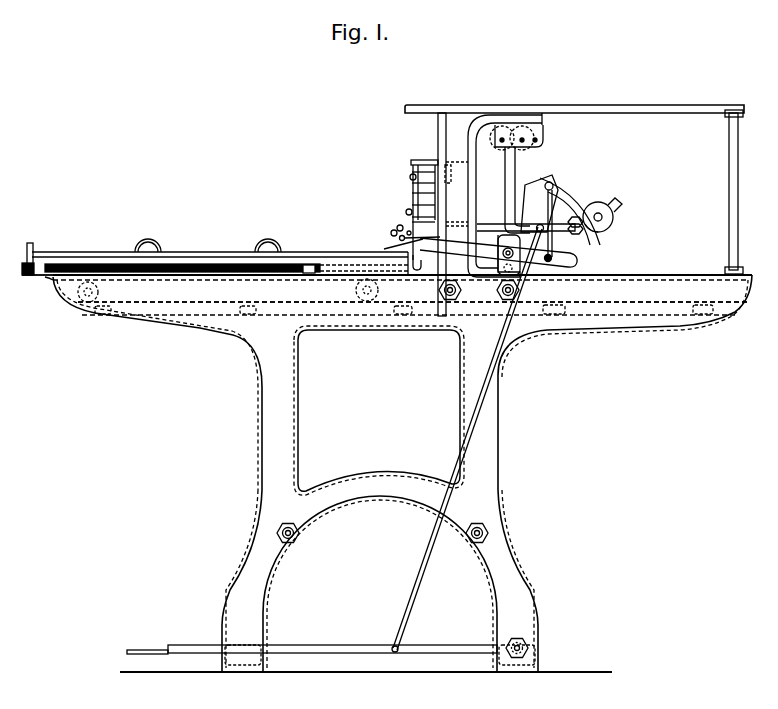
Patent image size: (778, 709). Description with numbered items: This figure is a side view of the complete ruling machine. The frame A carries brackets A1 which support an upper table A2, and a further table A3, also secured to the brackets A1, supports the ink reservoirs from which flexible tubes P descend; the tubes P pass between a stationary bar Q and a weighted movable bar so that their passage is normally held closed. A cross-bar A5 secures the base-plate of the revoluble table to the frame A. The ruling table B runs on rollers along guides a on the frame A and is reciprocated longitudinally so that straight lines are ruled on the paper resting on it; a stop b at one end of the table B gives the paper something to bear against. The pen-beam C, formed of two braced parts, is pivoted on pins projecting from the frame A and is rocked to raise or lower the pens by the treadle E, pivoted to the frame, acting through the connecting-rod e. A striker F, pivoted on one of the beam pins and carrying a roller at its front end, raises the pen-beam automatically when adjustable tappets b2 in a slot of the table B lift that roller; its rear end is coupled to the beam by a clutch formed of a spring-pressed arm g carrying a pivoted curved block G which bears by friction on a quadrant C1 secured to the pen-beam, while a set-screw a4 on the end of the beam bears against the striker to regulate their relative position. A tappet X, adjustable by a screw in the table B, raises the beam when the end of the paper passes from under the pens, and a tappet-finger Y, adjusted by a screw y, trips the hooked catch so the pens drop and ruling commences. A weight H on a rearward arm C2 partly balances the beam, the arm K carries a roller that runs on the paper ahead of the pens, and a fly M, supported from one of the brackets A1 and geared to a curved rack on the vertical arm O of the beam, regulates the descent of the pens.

The frame A is at (402, 473).
The brackets A1 is at (453, 214).
The table A2 is at (507, 106).
The table A3 is at (425, 162).
The cross-bar A5 is at (379, 410).
The guides a is at (221, 303).
The set-screw a4 is at (576, 255).
The table B is at (172, 256).
The stop b is at (34, 253).
The adjustable tappets b2 is at (208, 240).
The pen-beam C is at (495, 230).
The quadrant C1 is at (562, 203).
The arm C2 is at (620, 211).
The treadle E is at (199, 652).
The connecting-rod e is at (496, 352).
The striker F is at (424, 252).
The curved block G is at (550, 183).
The spring-pressed arm g is at (539, 218).
The weight H is at (603, 230).
The arm K is at (395, 229).
The fly M is at (540, 146).
The roller N is at (497, 147).
The vertical arm O is at (506, 188).
The flexible tubes P is at (410, 178).
The bar Q is at (406, 212).
The tappet X is at (384, 249).
The tappet-finger Y is at (308, 253).
The screw y is at (50, 278).